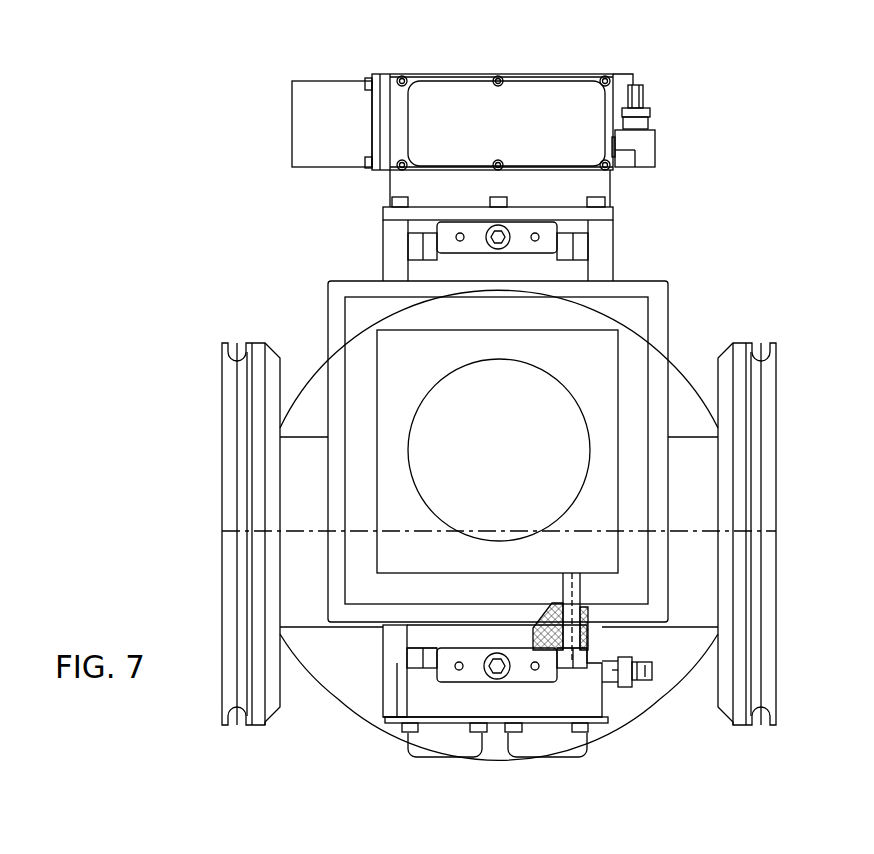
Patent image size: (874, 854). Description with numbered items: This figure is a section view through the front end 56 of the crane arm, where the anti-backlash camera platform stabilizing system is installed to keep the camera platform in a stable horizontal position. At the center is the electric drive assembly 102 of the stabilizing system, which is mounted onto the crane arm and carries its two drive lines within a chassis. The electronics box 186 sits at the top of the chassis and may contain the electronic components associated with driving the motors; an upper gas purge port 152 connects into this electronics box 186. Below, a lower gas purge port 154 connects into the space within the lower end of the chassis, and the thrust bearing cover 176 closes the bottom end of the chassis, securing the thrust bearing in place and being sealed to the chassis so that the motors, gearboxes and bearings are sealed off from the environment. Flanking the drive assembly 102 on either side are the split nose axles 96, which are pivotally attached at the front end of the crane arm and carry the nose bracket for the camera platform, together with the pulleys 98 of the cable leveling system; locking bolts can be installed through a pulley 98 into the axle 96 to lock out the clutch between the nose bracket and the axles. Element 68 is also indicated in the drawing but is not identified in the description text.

The front end 56 is at (657, 315).
The valve body lower portion 68 is at (629, 718).
The nose axles 96 is at (690, 483).
The pulley 98 is at (232, 376).
The electric drive assembly 102 is at (620, 254).
The upper gas purge port 152 is at (641, 102).
The lower gas purge port 154 is at (653, 684).
The thrust bearing cover 176 is at (432, 742).
The electronics box 186 is at (443, 148).